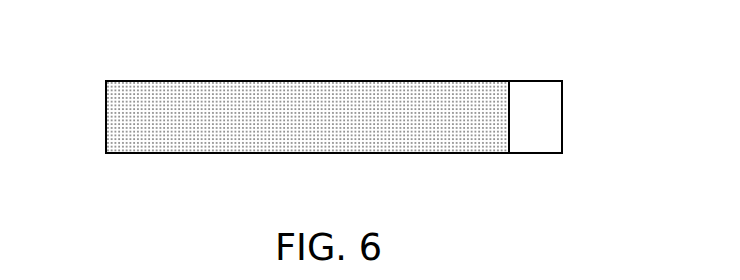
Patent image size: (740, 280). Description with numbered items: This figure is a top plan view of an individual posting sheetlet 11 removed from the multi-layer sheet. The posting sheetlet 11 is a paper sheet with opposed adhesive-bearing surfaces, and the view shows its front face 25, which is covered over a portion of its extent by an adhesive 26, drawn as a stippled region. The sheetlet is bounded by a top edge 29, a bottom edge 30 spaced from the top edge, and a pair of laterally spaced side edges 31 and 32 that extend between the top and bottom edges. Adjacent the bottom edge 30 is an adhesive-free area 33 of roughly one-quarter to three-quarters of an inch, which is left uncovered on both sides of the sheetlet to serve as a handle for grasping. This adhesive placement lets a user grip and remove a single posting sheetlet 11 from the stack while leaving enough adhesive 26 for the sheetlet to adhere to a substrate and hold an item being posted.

The posting sheetlet 11 is at (127, 170).
The front face 25 is at (395, 88).
The adhesive 26 is at (453, 128).
The top edge 29 is at (106, 116).
The bottom edge 30 is at (562, 117).
The side edge 31 is at (232, 153).
The side edge 32 is at (242, 82).
The adhesive-free area 33 is at (521, 130).